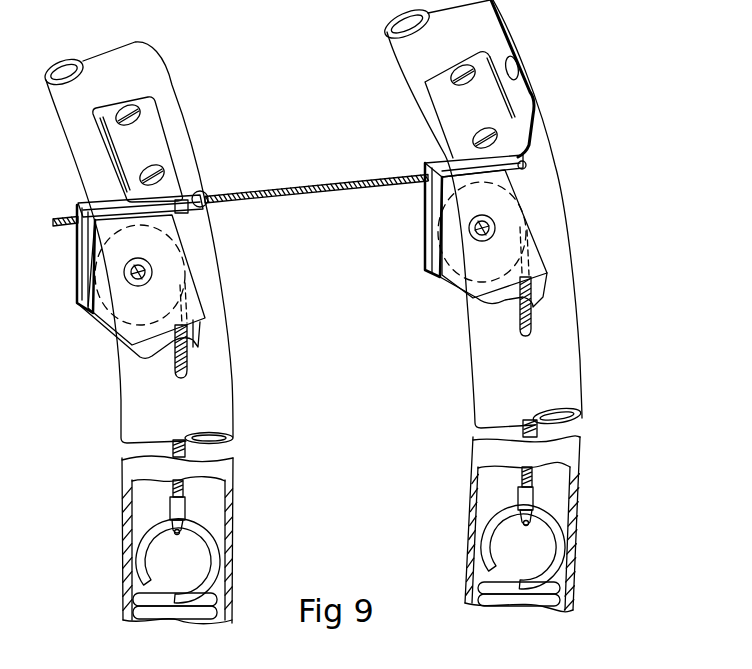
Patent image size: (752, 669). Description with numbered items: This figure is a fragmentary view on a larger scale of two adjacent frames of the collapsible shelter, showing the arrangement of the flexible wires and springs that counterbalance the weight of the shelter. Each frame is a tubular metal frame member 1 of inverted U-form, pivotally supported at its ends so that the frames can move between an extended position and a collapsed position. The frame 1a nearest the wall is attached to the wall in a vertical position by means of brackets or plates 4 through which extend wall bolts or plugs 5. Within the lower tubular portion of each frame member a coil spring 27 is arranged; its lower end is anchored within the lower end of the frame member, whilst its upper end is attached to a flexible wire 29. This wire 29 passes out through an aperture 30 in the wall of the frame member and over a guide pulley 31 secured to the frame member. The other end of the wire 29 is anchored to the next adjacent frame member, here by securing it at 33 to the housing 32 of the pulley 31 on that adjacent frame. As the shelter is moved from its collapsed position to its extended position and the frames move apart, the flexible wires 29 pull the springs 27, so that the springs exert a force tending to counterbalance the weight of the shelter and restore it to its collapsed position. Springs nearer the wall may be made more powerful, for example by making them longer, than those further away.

The tubular metal frame member 1 is at (183, 131).
The frame nearest the wall 1a is at (418, 88).
The bracket or plate 4 is at (524, 101).
The wall bolt or plug 5 is at (518, 66).
The coil spring 27 is at (213, 601).
The flexible wire 29 is at (306, 184).
The aperture 30 is at (188, 367).
The guide pulley 31 is at (98, 331).
The housing of the pulley 32 is at (197, 310).
The anchoring point 33 is at (204, 199).